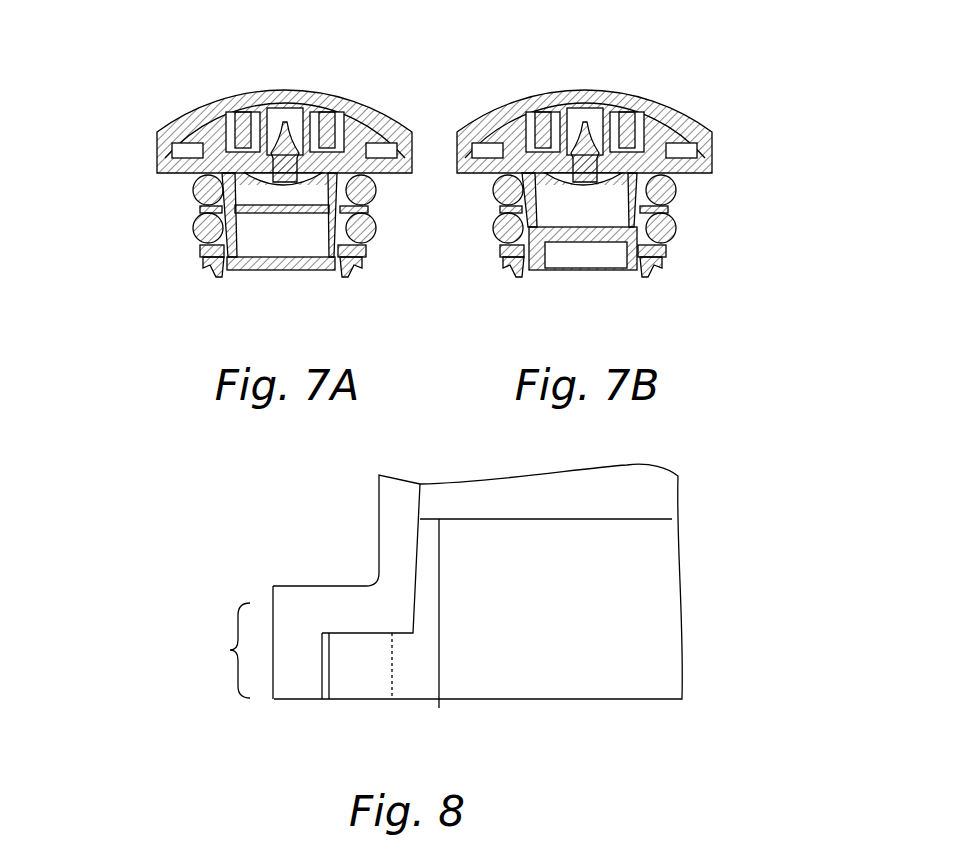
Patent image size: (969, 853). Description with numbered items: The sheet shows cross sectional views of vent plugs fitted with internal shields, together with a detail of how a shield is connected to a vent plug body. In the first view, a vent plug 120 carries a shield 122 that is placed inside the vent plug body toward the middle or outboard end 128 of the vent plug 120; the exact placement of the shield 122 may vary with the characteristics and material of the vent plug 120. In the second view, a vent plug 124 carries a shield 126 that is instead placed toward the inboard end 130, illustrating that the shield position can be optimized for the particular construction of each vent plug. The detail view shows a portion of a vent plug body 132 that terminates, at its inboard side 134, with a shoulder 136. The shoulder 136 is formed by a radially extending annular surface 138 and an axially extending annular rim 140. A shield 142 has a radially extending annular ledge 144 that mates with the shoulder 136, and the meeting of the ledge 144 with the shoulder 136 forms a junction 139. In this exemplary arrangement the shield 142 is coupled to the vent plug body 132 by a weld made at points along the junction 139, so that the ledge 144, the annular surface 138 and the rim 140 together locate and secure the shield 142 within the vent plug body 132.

In FIG. 7A, the vent plug 120 is at (152, 88).
In FIG. 7A, the shield 122 is at (268, 272).
In FIG. 7B, the vent plug 124 is at (688, 115).
In FIG. 7B, the shield 126 is at (597, 272).
In FIG. 7A, the outboard end 128 is at (155, 187).
In FIG. 7B, the inboard end 130 is at (690, 265).
In FIG. 8, the vent plug body 132 is at (395, 510).
In FIG. 8, the inboard side 134 is at (210, 578).
In FIG. 8, the shoulder 136 is at (216, 650).
In FIG. 8, the radially extending annular surface 138 is at (332, 602).
In FIG. 8, the junction 139 is at (363, 633).
In FIG. 8, the axially extending annular rim 140 is at (300, 682).
In FIG. 8, the shield 142 is at (439, 698).
In FIG. 8, the radially extending annular ledge 144 is at (358, 682).